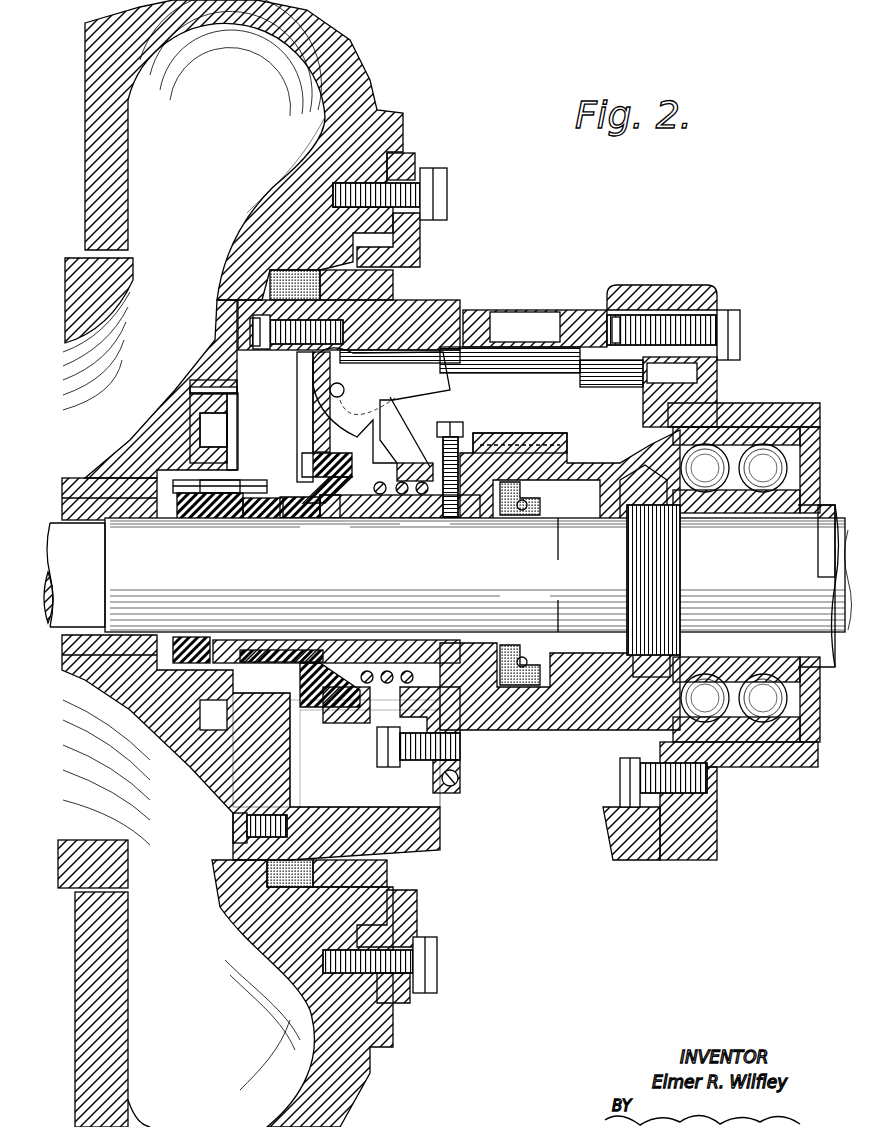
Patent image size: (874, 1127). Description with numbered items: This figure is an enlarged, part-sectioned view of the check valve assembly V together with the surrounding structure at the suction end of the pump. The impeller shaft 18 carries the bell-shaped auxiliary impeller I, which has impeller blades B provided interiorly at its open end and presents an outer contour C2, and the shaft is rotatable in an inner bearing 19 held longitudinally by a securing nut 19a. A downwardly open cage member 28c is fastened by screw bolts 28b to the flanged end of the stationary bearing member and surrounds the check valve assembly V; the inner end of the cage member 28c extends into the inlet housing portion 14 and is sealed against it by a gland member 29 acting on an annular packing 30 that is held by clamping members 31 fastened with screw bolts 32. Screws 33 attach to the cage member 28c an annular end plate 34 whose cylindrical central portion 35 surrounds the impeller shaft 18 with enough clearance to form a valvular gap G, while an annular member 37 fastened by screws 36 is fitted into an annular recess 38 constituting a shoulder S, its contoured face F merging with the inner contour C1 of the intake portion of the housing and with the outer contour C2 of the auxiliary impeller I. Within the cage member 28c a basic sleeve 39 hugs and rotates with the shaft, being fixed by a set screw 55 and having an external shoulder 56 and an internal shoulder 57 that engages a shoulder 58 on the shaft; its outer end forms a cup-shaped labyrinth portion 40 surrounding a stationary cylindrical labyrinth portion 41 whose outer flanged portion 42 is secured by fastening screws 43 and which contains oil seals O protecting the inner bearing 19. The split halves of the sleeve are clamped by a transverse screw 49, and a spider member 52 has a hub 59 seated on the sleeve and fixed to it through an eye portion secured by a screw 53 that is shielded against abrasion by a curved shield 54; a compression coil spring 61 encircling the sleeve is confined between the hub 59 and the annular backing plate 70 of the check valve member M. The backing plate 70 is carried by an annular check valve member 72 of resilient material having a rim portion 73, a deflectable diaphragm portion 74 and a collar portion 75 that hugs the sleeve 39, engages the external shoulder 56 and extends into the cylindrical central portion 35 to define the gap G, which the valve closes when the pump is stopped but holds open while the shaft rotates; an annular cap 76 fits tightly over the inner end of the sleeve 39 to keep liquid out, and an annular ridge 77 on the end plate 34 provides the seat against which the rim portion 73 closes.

The inlet housing portion 14 is at (358, 1094).
The impeller shaft 18 is at (448, 586).
The inner bearing 19 is at (750, 430).
The securing nut 19a is at (655, 500).
The screw bolts 28b is at (742, 342).
The cage member 28c is at (446, 302).
The gland member 29 is at (395, 283).
The annular packing 30 is at (262, 284).
The clamping members 31 is at (422, 252).
The screw bolts 32 is at (448, 194).
The screws 33 is at (255, 340).
The annular end plate 34 is at (297, 404).
The cylindrical central portion 35 is at (170, 495).
The screws 36 is at (233, 832).
The annular member 37 is at (213, 785).
The annular recess 38 is at (252, 868).
The basic sleeve 39 is at (388, 500).
The cup-shaped labyrinth portion 40 is at (512, 436).
The stationary cylindrical labyrinth portion 41 is at (572, 462).
The outer flanged portion 42 is at (648, 416).
The fastening screws 43 is at (612, 790).
The transverse screw 49 is at (452, 788).
The spider member 52 is at (415, 400).
The screw 53 is at (376, 739).
The curved shield 54 is at (390, 765).
The set screw 55 is at (464, 426).
The external shoulder 56 is at (313, 522).
The internal shoulder 57 is at (330, 522).
The shoulder 58 is at (330, 582).
The hub 59 is at (403, 462).
The compression coil spring 61 is at (390, 670).
The annular backing plate 70 is at (357, 718).
The annular check valve member 72 is at (296, 522).
The rim portion 73 is at (315, 709).
The diaphragm portion 74 is at (352, 640).
The collar portion 75 is at (244, 522).
The annular cap 76 is at (207, 637).
The annular ridge 77 is at (296, 705).
The impeller blades B is at (205, 433).
The inner contour C1 is at (283, 196).
The outer contour C2 is at (126, 455).
The contoured face F is at (208, 380).
The valvular gap G is at (268, 522).
The auxiliary impeller I is at (192, 402).
The check valve member M is at (343, 735).
The oil seals O is at (542, 494).
The shoulder S is at (248, 330).
The check valve assembly V is at (366, 777).